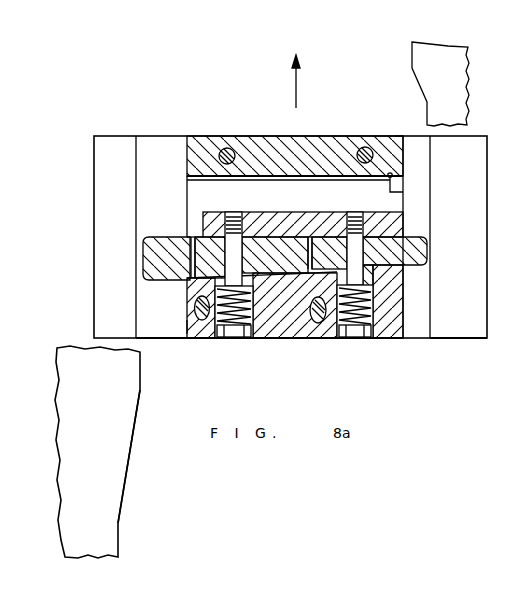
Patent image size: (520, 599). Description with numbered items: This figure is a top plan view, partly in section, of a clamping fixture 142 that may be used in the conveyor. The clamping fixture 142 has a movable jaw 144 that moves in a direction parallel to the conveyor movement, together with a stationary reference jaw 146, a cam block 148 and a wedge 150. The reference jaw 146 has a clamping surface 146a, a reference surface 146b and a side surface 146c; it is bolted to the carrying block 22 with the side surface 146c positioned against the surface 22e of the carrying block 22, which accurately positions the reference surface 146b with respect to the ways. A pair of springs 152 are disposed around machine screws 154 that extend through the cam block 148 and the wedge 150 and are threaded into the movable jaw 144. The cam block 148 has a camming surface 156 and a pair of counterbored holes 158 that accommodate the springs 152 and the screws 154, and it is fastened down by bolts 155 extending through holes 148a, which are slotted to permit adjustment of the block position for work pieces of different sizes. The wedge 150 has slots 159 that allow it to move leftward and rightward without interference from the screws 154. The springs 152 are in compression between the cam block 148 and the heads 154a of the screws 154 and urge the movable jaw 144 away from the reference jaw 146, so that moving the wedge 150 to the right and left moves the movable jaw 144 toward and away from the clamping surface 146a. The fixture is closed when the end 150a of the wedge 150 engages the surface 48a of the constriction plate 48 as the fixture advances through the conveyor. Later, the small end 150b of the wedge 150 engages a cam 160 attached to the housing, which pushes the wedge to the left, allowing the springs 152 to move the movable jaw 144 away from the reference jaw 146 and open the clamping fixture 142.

The clamping fixture 142 is at (228, 119).
The stationary reference jaw 146 is at (333, 136).
The clamping surface 146a is at (322, 178).
The reference surface 146b is at (390, 185).
The side surface 146c is at (410, 121).
The cam 160 is at (455, 72).
The surface of carrying block 22e is at (403, 168).
The carrying block 22 is at (452, 338).
The wedge 150 is at (179, 237).
The end of wedge 150a is at (145, 264).
The small end of wedge 150b is at (424, 250).
The movable jaw 144 is at (300, 231).
The slots 159 is at (223, 260).
The springs 152 is at (253, 313).
The camming surface 156 is at (318, 270).
The counterbored holes 158 is at (187, 292).
The bolts 155 is at (194, 308).
The cam block 148 is at (392, 340).
The holes 148a is at (195, 319).
The machine screws 154 is at (357, 252).
The heads of screws 154a is at (231, 340).
The constriction plate 48 is at (108, 407).
The surface of constriction plate 48a is at (133, 447).